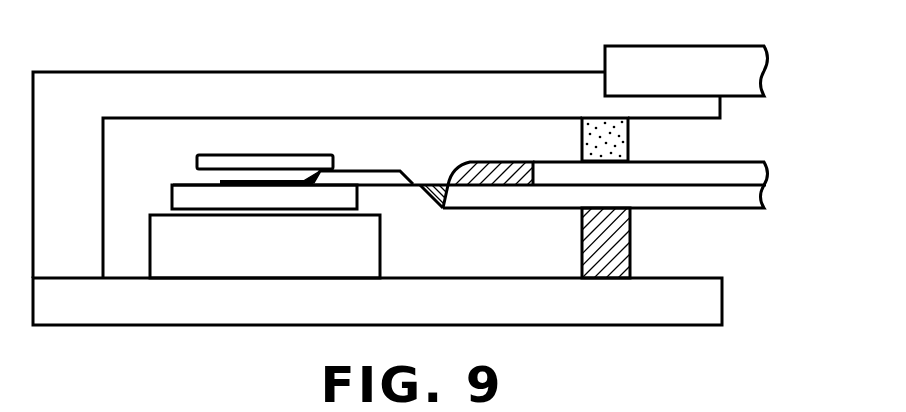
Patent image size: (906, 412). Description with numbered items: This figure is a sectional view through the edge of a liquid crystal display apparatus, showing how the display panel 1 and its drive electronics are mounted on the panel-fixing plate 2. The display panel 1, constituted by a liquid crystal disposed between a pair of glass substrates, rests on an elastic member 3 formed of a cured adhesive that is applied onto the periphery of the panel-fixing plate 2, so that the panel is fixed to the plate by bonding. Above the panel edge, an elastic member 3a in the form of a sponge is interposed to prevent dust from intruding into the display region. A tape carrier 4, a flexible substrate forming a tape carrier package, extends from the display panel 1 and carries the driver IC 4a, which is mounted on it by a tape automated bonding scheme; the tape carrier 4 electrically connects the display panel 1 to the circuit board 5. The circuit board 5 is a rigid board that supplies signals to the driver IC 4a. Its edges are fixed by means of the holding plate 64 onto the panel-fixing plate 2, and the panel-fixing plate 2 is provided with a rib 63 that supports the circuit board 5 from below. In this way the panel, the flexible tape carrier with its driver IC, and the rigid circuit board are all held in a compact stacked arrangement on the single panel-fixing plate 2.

The display panel 1 is at (722, 180).
The panel-fixing plate 2 is at (710, 300).
The elastic member 3 is at (612, 254).
The elastic member (sponge) 3a is at (606, 140).
The tape carrier 4 is at (428, 183).
The driver IC 4a is at (362, 173).
The circuit board 5 is at (187, 192).
The rib 63 is at (360, 258).
The holding plate 64 is at (263, 158).